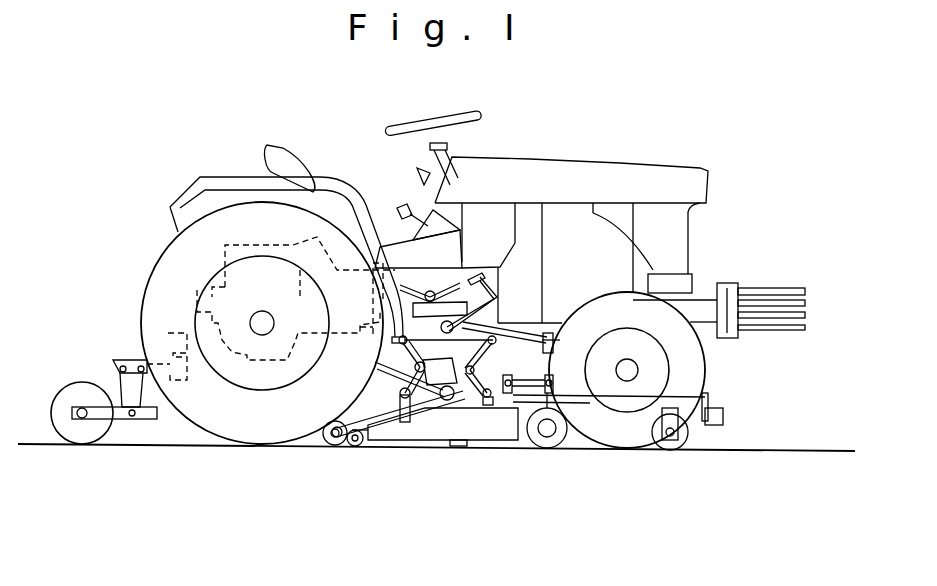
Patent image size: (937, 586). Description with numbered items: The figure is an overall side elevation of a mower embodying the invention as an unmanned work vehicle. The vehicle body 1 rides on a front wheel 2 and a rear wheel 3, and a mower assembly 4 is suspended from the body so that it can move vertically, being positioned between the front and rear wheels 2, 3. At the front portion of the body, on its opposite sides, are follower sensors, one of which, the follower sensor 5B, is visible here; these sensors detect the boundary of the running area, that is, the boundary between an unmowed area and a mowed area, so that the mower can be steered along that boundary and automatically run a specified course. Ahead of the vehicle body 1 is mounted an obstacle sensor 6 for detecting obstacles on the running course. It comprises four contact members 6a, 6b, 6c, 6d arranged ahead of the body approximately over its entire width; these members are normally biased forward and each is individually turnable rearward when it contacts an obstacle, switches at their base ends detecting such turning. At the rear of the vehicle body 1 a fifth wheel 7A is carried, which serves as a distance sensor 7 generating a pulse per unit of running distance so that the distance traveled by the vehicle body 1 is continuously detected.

The vehicle body 1 is at (643, 157).
The front wheel 2 is at (615, 440).
The rear wheel 3 is at (258, 437).
The mower assembly 4 is at (433, 422).
The follower sensor 5B is at (710, 433).
The obstacle sensor 6 is at (768, 270).
The contact member 6a is at (797, 332).
The contact member 6b is at (807, 315).
The contact member 6c is at (807, 300).
The contact member 6d is at (793, 287).
The distance sensor 7 is at (97, 333).
The fifth wheel 7A is at (82, 437).